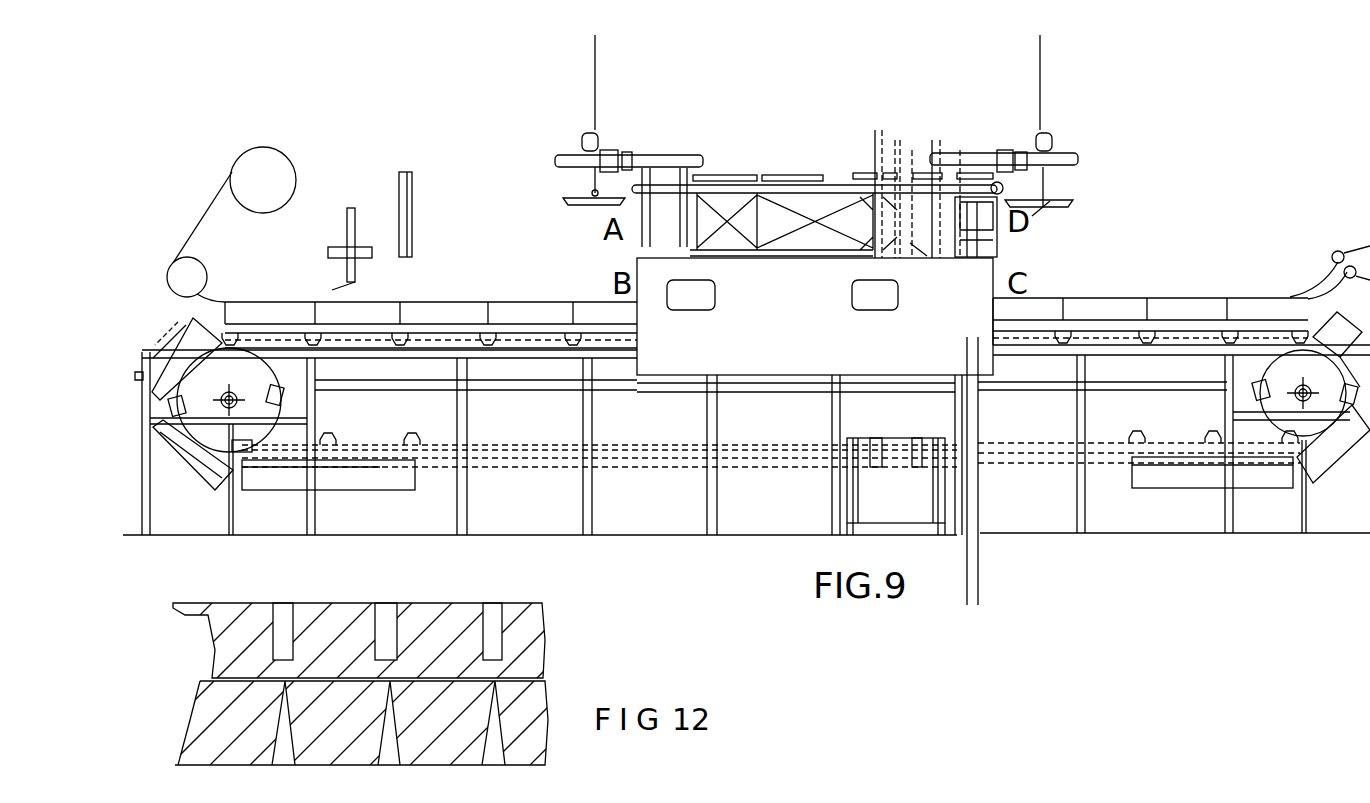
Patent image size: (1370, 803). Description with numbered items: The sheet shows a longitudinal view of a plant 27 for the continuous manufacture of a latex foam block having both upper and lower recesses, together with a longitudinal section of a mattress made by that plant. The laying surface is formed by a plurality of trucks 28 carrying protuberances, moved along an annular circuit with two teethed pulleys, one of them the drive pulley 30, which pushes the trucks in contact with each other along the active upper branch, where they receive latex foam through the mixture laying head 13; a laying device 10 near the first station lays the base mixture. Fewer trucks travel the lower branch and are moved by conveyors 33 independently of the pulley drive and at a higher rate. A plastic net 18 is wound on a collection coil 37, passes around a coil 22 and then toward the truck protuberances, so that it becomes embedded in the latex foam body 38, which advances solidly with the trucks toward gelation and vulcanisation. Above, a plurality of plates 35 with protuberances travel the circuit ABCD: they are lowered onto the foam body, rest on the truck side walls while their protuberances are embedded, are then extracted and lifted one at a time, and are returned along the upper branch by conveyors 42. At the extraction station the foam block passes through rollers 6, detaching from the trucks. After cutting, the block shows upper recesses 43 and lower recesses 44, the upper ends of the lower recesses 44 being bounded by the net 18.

In FIG. 9, the rollers 6 is at (1333, 253).
In FIG. 9, the laying device 10 is at (352, 212).
In FIG. 9, the mixture laying head 13 is at (352, 281).
In FIG. 9, the net 18 is at (202, 313).
In FIG. 12, the net 18 is at (540, 673).
In FIG. 9, the coil 22 is at (187, 280).
In FIG. 9, the plant 27 is at (1107, 191).
In FIG. 9, the trucks 28 is at (1123, 318).
In FIG. 9, the drive pulley 30 is at (220, 432).
In FIG. 9, the conveyors 33 is at (1013, 462).
In FIG. 9, the plates 35 is at (578, 207).
In FIG. 9, the collection coil 37 is at (261, 180).
In FIG. 9, the latex foam body 38 is at (1323, 287).
In FIG. 12, the latex foam body 38 is at (574, 637).
In FIG. 9, the conveyors 42 is at (832, 178).
In FIG. 12, the upper recesses 43 is at (392, 615).
In FIG. 12, the lower recesses 44 is at (387, 750).